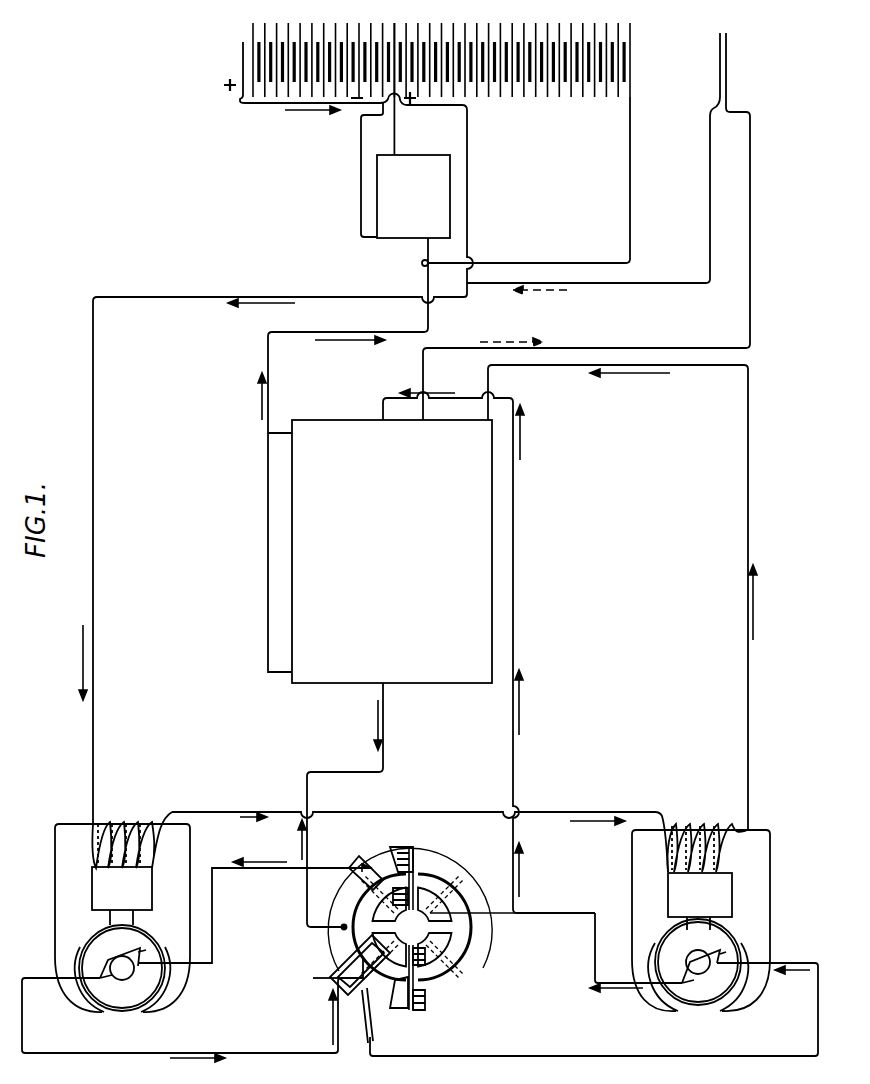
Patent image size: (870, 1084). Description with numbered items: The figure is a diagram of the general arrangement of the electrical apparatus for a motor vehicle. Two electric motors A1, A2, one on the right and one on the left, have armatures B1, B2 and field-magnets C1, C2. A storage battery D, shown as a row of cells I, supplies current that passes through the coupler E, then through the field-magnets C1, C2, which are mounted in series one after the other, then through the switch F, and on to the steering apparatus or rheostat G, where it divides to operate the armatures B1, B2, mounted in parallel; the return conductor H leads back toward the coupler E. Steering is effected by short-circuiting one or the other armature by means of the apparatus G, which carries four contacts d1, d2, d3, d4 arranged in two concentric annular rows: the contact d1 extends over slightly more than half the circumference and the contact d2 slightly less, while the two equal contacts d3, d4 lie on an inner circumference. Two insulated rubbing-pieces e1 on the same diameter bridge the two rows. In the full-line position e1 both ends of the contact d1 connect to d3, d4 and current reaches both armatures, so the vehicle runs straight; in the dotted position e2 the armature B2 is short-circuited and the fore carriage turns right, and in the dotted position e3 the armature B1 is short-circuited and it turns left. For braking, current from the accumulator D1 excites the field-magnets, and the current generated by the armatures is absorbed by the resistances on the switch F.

The battery I is at (427, 58).
The storage battery D is at (401, 82).
The accumulator D1 is at (586, 226).
The conductor H is at (529, 188).
The coupler E is at (359, 387).
The switch F is at (520, 647).
The electric motor A1 is at (122, 935).
The armature B1 is at (122, 968).
The field-magnet C1 is at (134, 840).
The electric motor A2 is at (701, 938).
The armature B2 is at (698, 962).
The field-magnet C2 is at (685, 848).
The steering apparatus G is at (400, 938).
The rubbing-pieces e1 is at (413, 967).
The rubbing-pieces dotted-line position e2 is at (490, 917).
The rubbing-pieces dotted-line position e3 is at (455, 975).
The contact d1 is at (447, 988).
The contact d2 is at (348, 921).
The contact d3 is at (360, 1005).
The contact d4 is at (430, 900).